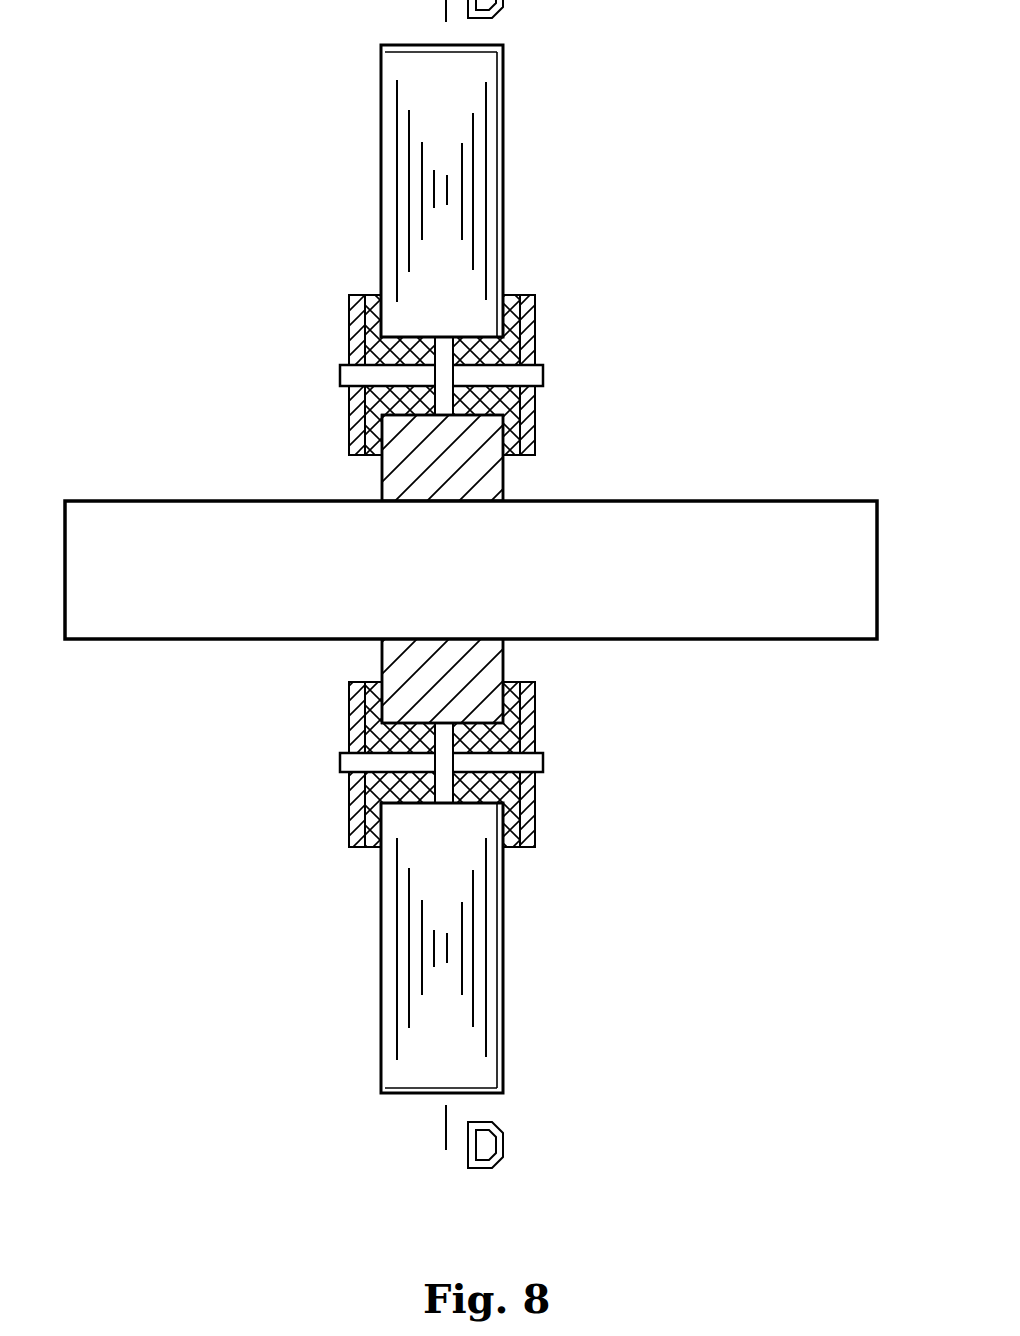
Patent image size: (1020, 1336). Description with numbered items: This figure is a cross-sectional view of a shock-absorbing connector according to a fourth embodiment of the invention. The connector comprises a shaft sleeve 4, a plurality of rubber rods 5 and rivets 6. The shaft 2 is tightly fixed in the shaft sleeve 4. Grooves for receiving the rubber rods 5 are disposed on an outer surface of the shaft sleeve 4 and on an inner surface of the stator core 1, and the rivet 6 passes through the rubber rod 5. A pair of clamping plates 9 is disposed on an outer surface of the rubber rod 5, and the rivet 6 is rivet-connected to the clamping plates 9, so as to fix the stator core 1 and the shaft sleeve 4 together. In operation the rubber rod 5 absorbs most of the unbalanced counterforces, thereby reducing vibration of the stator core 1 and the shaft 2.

The stator core 1 is at (470, 160).
The shaft 2 is at (685, 592).
The shaft sleeve 4 is at (442, 457).
The rubber rod 5 is at (380, 340).
The rivet 6 is at (523, 375).
The clamping plate 9 is at (350, 435).